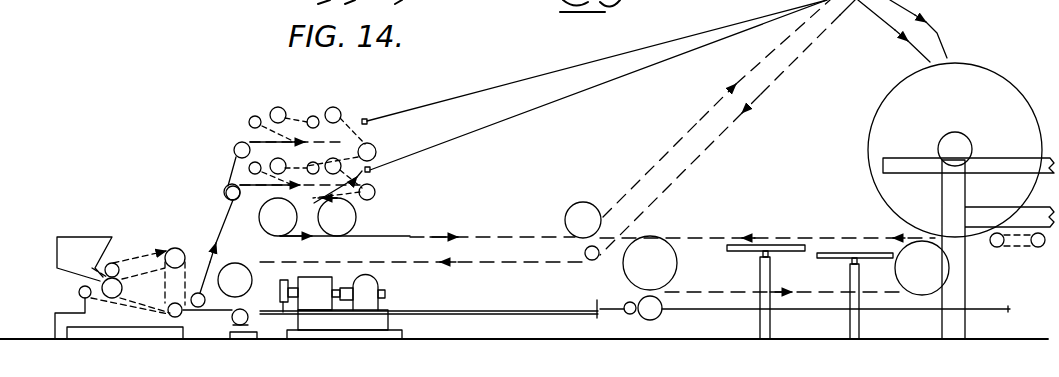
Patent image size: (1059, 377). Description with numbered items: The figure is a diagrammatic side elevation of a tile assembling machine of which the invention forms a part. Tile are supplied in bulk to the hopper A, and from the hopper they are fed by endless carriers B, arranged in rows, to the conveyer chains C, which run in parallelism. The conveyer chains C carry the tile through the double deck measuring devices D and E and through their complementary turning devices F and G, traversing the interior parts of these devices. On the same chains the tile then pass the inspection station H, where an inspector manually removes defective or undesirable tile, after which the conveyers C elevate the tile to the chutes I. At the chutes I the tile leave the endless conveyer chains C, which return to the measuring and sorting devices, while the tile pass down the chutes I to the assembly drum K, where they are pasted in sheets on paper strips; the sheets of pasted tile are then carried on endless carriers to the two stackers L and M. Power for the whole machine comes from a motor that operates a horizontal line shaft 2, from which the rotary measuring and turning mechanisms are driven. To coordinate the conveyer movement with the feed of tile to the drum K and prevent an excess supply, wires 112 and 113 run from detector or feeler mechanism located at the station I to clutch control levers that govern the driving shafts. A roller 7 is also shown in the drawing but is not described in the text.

The hopper A is at (84, 244).
The endless carriers B is at (143, 280).
The conveyer chains C is at (213, 215).
The double deck measuring device D is at (279, 124).
The double deck measuring device E is at (274, 165).
The turning device F is at (353, 104).
The turning device G is at (377, 152).
The inspection station H is at (597, 247).
The chutes I is at (341, 307).
The assembly drum K is at (961, 201).
The stacker L is at (855, 296).
The stacker M is at (758, 292).
The roller 7 is at (236, 274).
The horizontal line shaft 2 is at (513, 310).
The wire 112 is at (562, 66).
The wire 113 is at (590, 88).